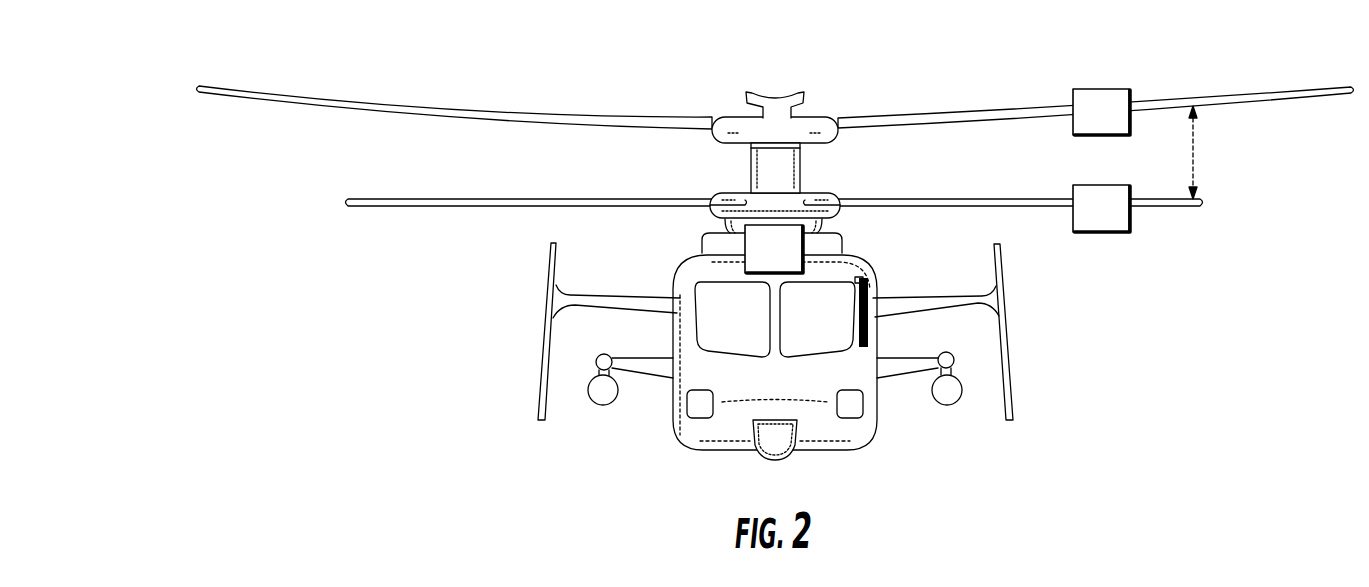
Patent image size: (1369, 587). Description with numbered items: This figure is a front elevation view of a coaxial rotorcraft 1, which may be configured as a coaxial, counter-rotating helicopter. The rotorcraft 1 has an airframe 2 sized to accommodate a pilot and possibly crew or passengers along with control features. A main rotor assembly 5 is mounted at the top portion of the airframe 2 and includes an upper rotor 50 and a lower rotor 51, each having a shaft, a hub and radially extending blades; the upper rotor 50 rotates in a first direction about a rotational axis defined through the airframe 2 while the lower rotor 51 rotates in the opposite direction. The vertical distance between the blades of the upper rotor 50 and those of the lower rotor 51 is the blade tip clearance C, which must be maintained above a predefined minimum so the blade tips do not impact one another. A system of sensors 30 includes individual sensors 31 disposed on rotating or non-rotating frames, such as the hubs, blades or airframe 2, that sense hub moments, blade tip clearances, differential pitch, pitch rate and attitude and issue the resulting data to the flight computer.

The coaxial rotorcraft 1 is at (733, 290).
The airframe 2 is at (848, 383).
The main rotor assembly 5 is at (750, 165).
The system of sensors 30 is at (965, 211).
The sensor 31 is at (784, 259).
The upper rotor 50 is at (196, 89).
The lower rotor 51 is at (345, 202).
The blade tip clearance C is at (1196, 150).